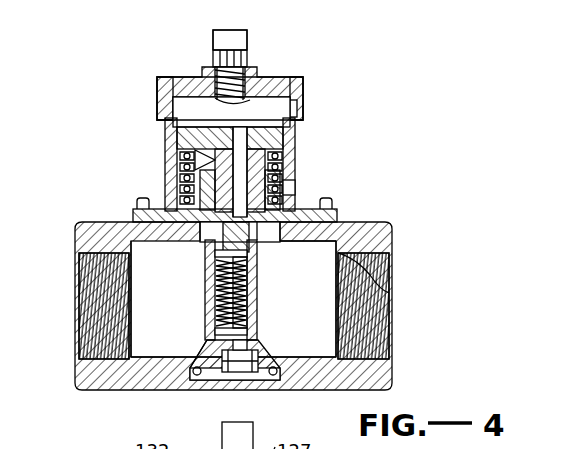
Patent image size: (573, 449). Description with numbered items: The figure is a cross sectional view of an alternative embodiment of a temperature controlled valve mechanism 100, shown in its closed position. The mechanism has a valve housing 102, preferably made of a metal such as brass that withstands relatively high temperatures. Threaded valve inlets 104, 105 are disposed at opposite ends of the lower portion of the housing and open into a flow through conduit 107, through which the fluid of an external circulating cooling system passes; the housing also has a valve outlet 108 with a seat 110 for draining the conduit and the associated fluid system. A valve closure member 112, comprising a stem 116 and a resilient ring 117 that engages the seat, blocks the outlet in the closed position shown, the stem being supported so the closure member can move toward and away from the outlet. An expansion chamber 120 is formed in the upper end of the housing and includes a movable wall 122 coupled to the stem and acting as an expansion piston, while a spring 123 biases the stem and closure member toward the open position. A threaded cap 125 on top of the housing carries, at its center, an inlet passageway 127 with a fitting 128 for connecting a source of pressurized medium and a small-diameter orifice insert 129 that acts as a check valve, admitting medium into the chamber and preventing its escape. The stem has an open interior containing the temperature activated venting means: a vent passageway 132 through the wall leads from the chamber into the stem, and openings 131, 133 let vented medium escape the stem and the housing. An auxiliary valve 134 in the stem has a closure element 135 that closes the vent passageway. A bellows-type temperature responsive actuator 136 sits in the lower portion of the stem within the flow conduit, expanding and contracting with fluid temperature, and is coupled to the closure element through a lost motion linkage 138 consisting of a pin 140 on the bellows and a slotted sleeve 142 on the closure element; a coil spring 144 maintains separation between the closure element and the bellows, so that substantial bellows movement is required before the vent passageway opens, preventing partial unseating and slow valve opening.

The temperature controlled valve mechanism 100 is at (132, 80).
The valve housing 102 is at (105, 222).
The valve inlet 104 is at (75, 350).
The valve inlet 105 is at (393, 278).
The flow through conduit 107 is at (310, 239).
The valve outlet 108 is at (240, 385).
The seat 110 is at (278, 367).
The valve closure member 112 is at (200, 362).
The stem 116 is at (210, 266).
The resilient ring 117 is at (196, 375).
The expansion chamber 120 is at (231, 112).
The movable wall 122 is at (297, 93).
The spring 123 is at (233, 153).
The threaded cap 125 is at (175, 77).
The inlet passageway 127 is at (288, 80).
The fitting 128 is at (245, 60).
The orifice insert 129 is at (235, 45).
The opening 131 is at (283, 156).
The vent passageway 132 is at (295, 121).
The opening 133 is at (283, 171).
The auxiliary valve 134 is at (178, 136).
The closure element 135 is at (208, 158).
The temperature responsive actuator 136 is at (215, 288).
The lost motion linkage 138 is at (208, 180).
The pin 140 is at (198, 190).
The slotted sleeve 142 is at (292, 187).
The coil spring 144 is at (252, 252).